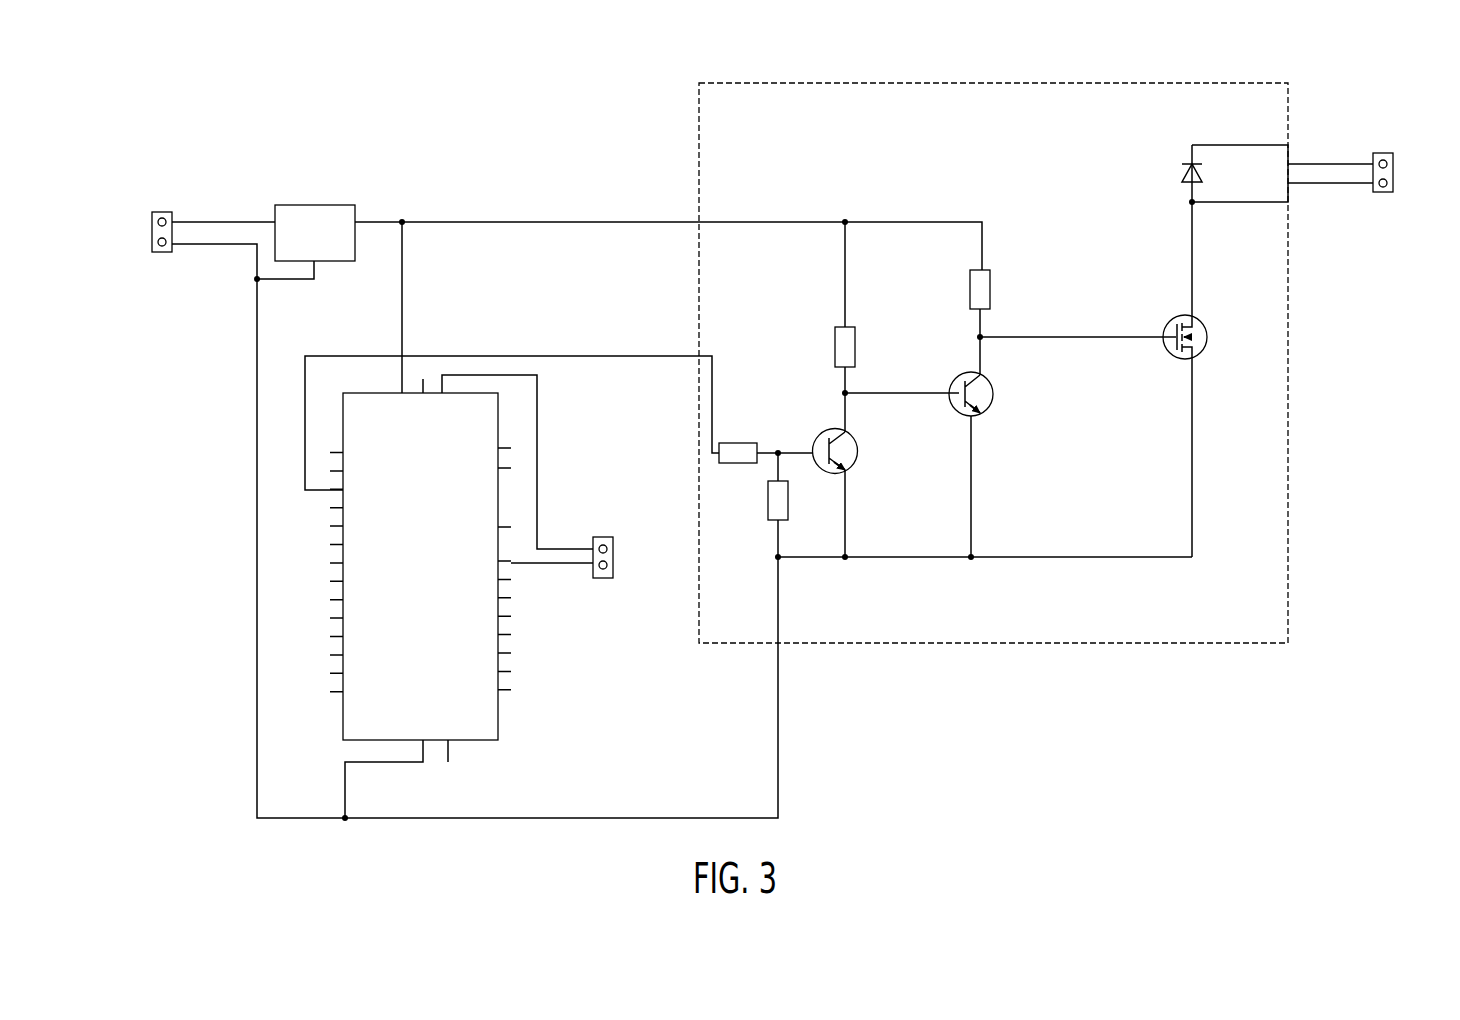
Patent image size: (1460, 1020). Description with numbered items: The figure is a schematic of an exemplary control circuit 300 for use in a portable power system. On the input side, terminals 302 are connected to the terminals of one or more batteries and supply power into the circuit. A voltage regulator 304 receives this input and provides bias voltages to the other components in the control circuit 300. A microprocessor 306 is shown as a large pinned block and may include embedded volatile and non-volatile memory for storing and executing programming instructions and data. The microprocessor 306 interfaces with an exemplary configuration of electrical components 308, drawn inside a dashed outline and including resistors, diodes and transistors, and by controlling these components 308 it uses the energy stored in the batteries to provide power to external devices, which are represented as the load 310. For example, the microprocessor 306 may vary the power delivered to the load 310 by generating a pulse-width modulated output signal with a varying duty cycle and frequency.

The control circuit 300 is at (225, 100).
The terminals 302 is at (137, 228).
The regulator 304 is at (340, 158).
The microprocessor 306 is at (407, 523).
The components 308 is at (1243, 652).
The load 310 is at (1363, 122).